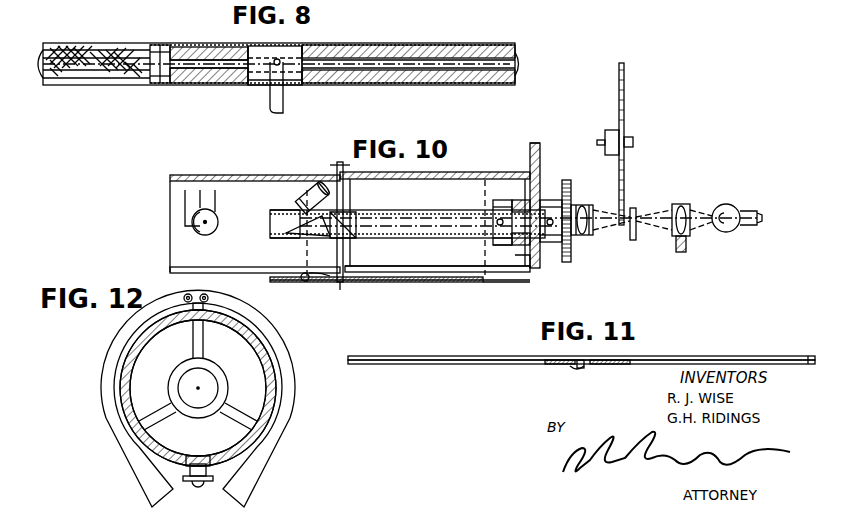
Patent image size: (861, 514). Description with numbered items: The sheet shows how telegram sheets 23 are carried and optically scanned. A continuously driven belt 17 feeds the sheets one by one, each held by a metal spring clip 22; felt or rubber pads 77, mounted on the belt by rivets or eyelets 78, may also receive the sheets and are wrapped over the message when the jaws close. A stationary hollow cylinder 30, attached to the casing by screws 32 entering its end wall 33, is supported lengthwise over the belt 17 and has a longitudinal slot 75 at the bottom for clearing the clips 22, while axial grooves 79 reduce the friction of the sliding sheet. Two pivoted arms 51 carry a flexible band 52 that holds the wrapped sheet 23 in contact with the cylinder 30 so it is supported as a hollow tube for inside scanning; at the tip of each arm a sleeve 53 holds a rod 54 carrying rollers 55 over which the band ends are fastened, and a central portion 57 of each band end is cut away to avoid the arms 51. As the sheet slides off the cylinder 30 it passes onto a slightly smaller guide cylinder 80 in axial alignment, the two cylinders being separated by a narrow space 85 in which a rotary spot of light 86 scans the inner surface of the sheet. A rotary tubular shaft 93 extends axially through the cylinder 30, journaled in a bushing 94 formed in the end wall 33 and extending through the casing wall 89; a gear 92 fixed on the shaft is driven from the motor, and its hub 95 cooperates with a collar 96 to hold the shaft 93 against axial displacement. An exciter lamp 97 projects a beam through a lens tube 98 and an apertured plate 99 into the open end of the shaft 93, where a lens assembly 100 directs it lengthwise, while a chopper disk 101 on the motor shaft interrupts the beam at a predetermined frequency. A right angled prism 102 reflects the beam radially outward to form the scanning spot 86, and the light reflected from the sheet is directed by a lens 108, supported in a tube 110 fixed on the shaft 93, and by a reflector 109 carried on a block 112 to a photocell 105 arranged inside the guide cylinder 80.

In FIG. 10, the belt 17 is at (513, 283).
In FIG. 12, the belt 17 is at (188, 482).
In FIG. 11, the belt 17 is at (574, 368).
In FIG. 10, the metal spring clips 22 is at (302, 280).
In FIG. 12, the metal spring clips 22 is at (205, 462).
In FIG. 10, the telegram sheets 23 is at (432, 172).
In FIG. 12, the telegram sheets 23 is at (266, 389).
In FIG. 11, the telegram sheets 23 is at (484, 357).
In FIG. 10, the stationary hollow cylinder 30 is at (510, 165).
In FIG. 12, the stationary hollow cylinder 30 is at (133, 357).
In FIG. 10, the screws 32 is at (533, 268).
In FIG. 10, the end wall 33 is at (533, 165).
In FIG. 8, the arms 51 is at (270, 104).
In FIG. 12, the arms 51 is at (147, 482).
In FIG. 8, the flexible band 52 is at (125, 47).
In FIG. 8, the sleeve 53 is at (290, 48).
In FIG. 8, the rod 54 is at (215, 70).
In FIG. 8, the rollers 55 is at (160, 68).
In FIG. 8, the cut-away portion 57 is at (249, 86).
In FIG. 10, the longitudinal slot 75 is at (440, 268).
In FIG. 12, the longitudinal slot 75 is at (190, 456).
In FIG. 12, the pads 77 is at (272, 378).
In FIG. 11, the pads 77 is at (410, 366).
In FIG. 11, the rivets or eyelets 78 is at (584, 370).
In FIG. 12, the axial grooves 79 is at (118, 389).
In FIG. 10, the guide cylinder 80 is at (238, 178).
In FIG. 10, the narrow space 85 is at (339, 292).
In FIG. 10, the rotary spot of light 86 is at (338, 172).
In FIG. 10, the casing wall 89 is at (541, 152).
In FIG. 10, the gear 92 is at (568, 190).
In FIG. 10, the rotary tubular shaft 93 is at (402, 214).
In FIG. 10, the bushing 94 is at (495, 208).
In FIG. 10, the hub 95 is at (551, 200).
In FIG. 10, the collar 96 is at (498, 246).
In FIG. 10, the exciter lamp 97 is at (730, 208).
In FIG. 10, the lens tube 98 is at (686, 208).
In FIG. 10, the apertured plate 99 is at (634, 210).
In FIG. 10, the lens assembly 100 is at (594, 212).
In FIG. 10, the chopper disk 101 is at (624, 99).
In FIG. 10, the right angled prism 102 is at (365, 212).
In FIG. 10, the photocell 105 is at (214, 233).
In FIG. 10, the lens 108 is at (302, 198).
In FIG. 10, the reflector 109 is at (296, 236).
In FIG. 10, the tube 110 is at (292, 214).
In FIG. 10, the block 112 is at (343, 238).